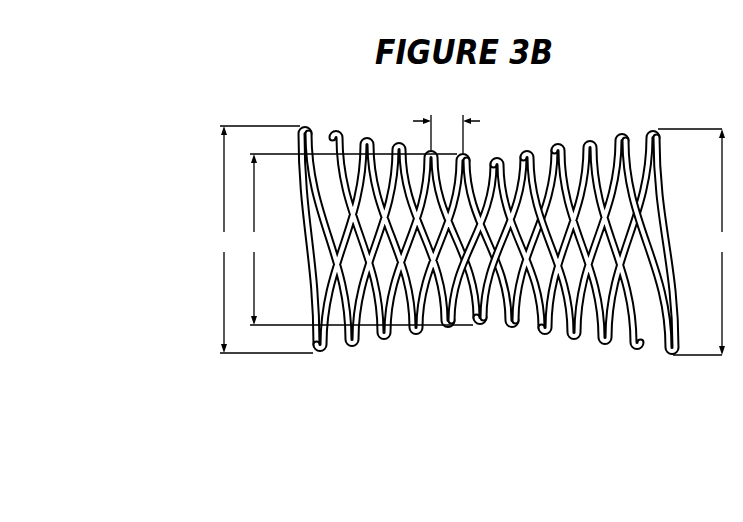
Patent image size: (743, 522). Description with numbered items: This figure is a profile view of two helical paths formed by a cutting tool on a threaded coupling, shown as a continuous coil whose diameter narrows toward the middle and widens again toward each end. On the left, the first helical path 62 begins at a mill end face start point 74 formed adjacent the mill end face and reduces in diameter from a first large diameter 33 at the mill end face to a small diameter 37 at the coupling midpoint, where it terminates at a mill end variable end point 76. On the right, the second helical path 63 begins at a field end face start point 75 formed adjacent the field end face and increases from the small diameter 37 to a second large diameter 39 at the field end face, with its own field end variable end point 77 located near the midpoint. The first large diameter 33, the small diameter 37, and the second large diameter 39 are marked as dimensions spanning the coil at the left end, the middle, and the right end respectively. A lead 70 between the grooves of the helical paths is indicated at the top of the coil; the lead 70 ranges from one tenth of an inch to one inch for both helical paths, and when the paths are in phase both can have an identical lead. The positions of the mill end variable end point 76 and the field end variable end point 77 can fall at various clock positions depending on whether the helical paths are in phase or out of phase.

The first large diameter 33 is at (264, 239).
The small diameter 37 is at (359, 239).
The second large diameter 39 is at (693, 242).
The first helical path 62 is at (306, 244).
The second helical path 63 is at (668, 244).
The lead 70 is at (446, 132).
The mill end face start point 74 is at (305, 124).
The field end face start point 75 is at (668, 354).
The mill end variable end point 76 is at (490, 272).
The field end variable end point 77 is at (487, 243).